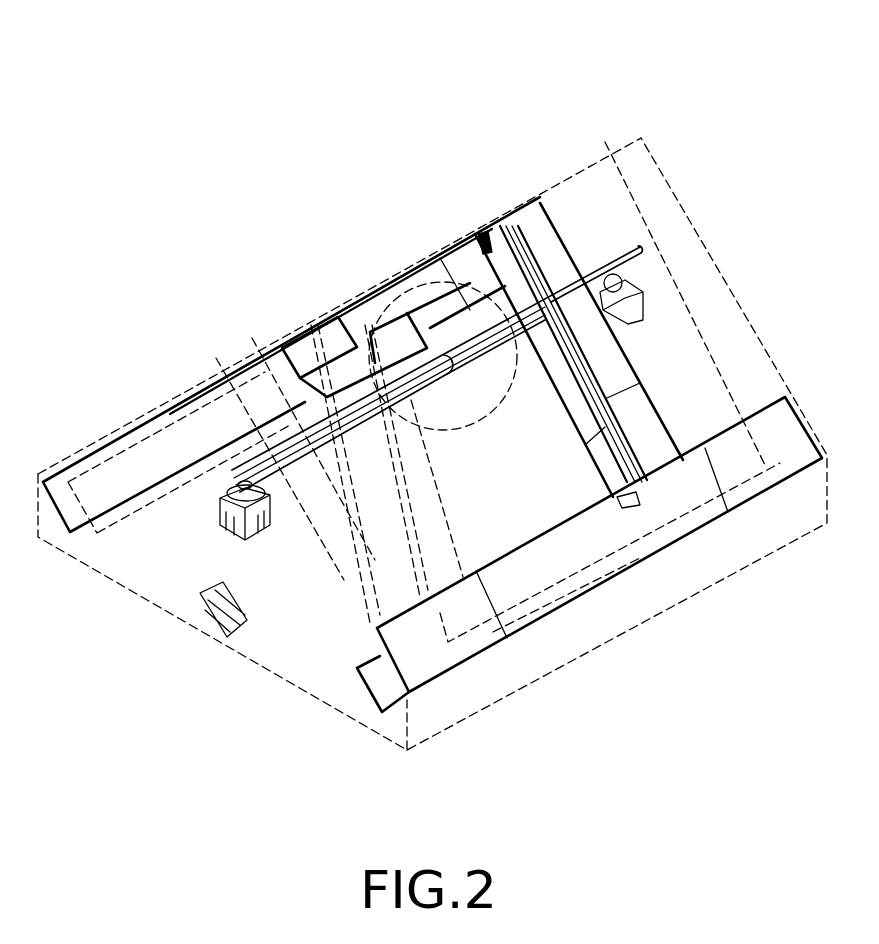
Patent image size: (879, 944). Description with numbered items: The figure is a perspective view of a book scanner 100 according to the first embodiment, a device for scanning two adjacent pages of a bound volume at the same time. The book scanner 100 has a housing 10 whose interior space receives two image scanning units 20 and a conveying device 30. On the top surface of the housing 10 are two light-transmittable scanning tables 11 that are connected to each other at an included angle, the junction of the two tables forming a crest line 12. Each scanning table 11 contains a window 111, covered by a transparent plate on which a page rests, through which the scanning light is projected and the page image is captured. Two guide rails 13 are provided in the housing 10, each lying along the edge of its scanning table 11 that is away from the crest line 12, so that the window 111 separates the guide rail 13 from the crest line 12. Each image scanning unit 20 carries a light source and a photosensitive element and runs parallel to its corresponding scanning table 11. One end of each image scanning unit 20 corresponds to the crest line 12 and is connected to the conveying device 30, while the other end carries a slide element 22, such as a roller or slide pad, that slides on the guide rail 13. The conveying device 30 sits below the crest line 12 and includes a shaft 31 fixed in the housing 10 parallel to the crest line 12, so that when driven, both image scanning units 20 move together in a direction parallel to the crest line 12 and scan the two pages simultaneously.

The book scanner 100 is at (256, 151).
The housing 10 is at (662, 160).
The scanning table 11 is at (263, 342).
The window 111 is at (710, 368).
The crest line 12 is at (605, 142).
The guide rail 13 is at (51, 497).
The image scanning unit 20 is at (528, 220).
The slide element 22 is at (640, 508).
The conveying device 30 is at (187, 465).
The shaft 31 is at (233, 477).